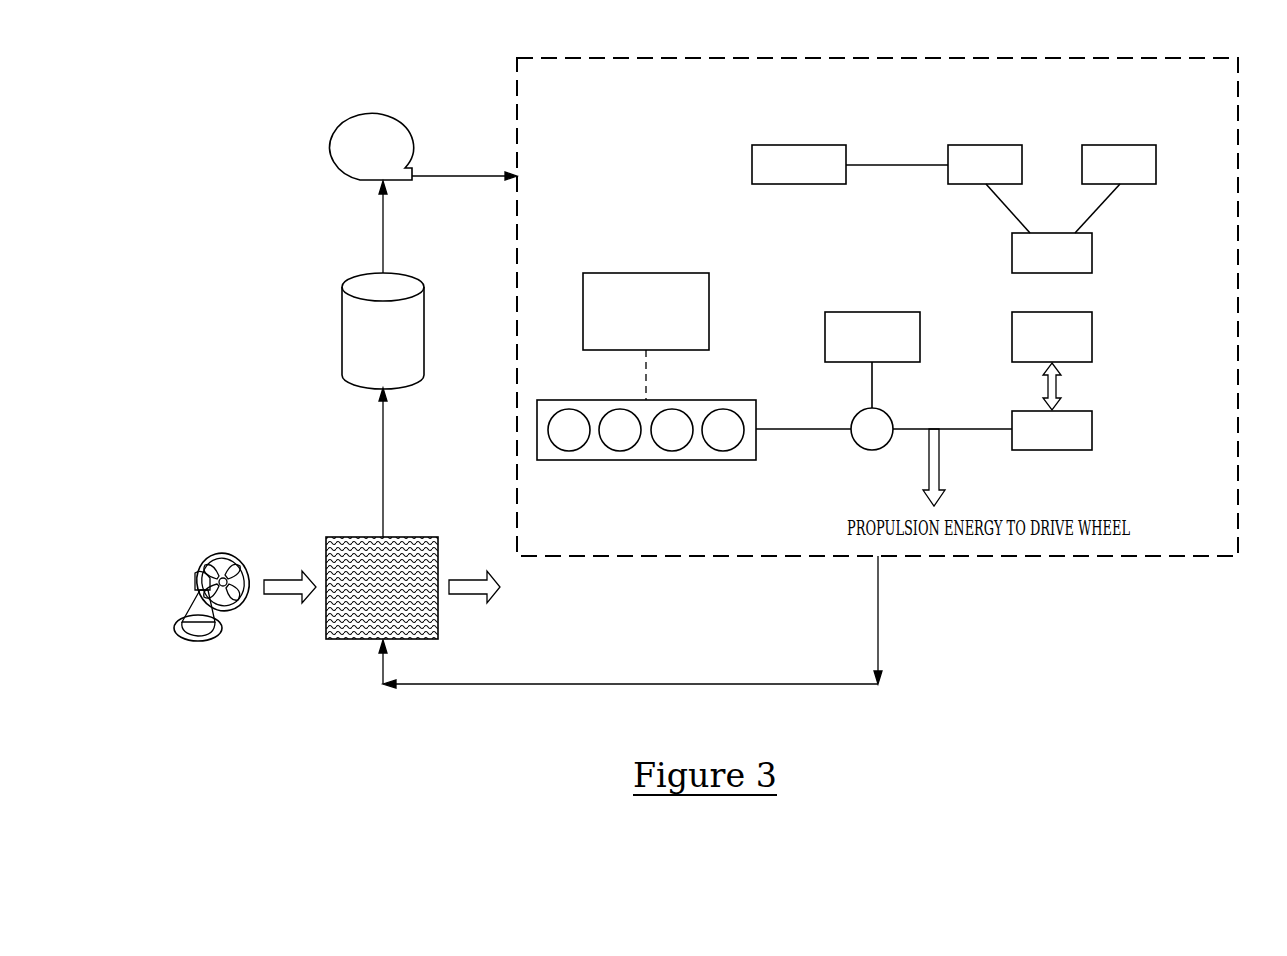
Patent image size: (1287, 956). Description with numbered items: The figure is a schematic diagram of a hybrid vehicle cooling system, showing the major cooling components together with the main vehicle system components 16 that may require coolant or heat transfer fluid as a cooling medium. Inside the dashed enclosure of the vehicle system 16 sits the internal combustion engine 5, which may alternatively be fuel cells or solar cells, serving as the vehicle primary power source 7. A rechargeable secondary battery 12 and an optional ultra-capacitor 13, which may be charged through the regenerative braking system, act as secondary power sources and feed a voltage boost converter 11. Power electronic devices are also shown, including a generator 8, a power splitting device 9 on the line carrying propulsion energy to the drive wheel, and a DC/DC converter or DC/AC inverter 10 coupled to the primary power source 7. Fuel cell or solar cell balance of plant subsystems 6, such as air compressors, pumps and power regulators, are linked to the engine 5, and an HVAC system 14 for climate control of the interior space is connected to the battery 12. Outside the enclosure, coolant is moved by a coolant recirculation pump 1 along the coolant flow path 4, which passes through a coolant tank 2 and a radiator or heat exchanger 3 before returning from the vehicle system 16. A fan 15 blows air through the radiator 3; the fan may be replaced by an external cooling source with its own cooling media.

The coolant recirculation pump 1 is at (373, 112).
The coolant tank 2 is at (424, 330).
The radiator or heat exchanger 3 is at (418, 537).
The coolant flow path 4 is at (570, 674).
The internal combustion engine 5 is at (646, 460).
The balance of plant subsystems 6 is at (646, 273).
The vehicle primary power source 7 is at (1092, 430).
The generator 8 is at (870, 312).
The power splitting device 9 is at (872, 450).
The DC/DC converter or DC/AC inverter 10 is at (1092, 337).
The voltage boost converter 11 is at (1092, 252).
The rechargeable secondary battery 12 is at (985, 145).
The ultra-capacitor 13 is at (1119, 145).
The HVAC system 14 is at (799, 145).
The fan 15 is at (210, 562).
The vehicle system components 16 is at (744, 42).